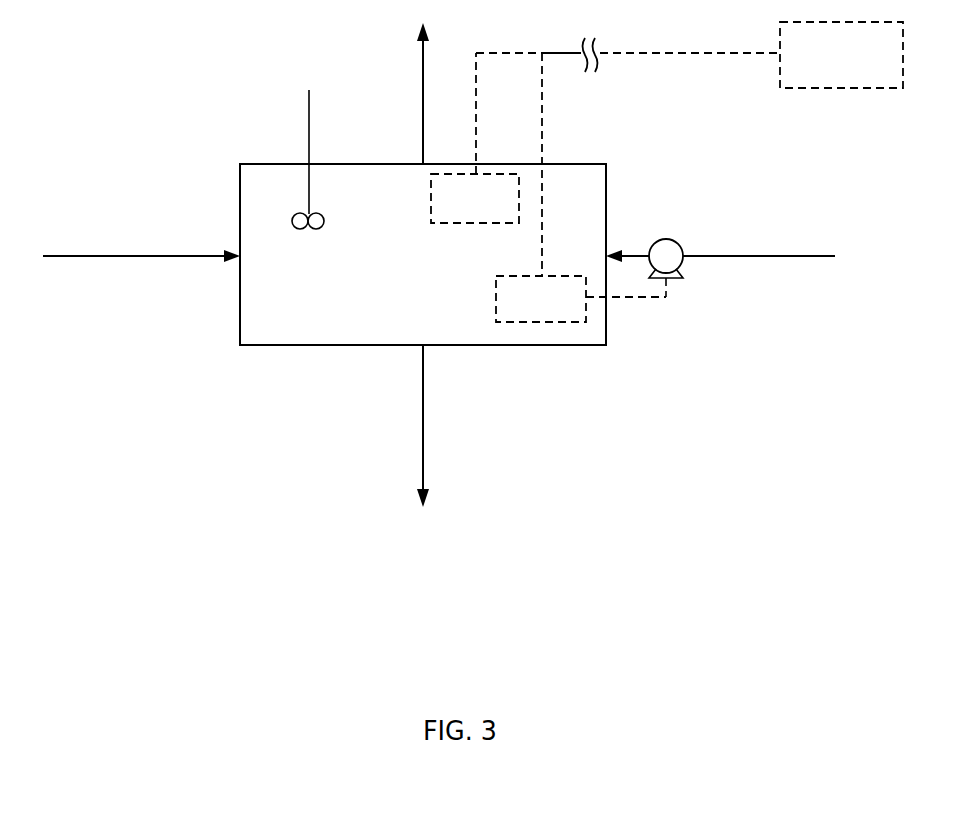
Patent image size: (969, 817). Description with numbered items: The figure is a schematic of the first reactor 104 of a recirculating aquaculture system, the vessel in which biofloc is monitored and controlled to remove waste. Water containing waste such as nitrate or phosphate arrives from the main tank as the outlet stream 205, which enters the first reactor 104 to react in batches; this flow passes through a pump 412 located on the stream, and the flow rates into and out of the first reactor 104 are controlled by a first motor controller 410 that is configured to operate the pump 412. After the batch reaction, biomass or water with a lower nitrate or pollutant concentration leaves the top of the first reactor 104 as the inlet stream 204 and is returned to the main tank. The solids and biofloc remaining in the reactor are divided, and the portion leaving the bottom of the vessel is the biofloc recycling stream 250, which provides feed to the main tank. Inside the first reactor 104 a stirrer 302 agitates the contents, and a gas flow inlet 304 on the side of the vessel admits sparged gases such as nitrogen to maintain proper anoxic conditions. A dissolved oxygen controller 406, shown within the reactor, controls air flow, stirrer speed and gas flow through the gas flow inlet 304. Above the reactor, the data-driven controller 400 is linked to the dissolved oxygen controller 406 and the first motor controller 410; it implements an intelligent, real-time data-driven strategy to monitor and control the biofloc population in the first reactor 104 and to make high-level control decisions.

The first reactor 104 is at (423, 254).
The inlet stream 204 is at (422, 73).
The outlet stream 205 is at (734, 253).
The biofloc recycling stream 250 is at (422, 413).
The stirrer 302 is at (307, 117).
The gas flow inlet 304 is at (104, 253).
The data-driven controller 400 is at (722, 55).
The dissolved oxygen controller 406 is at (486, 138).
The first motor controller 410 is at (581, 187).
The pump 412 is at (680, 276).